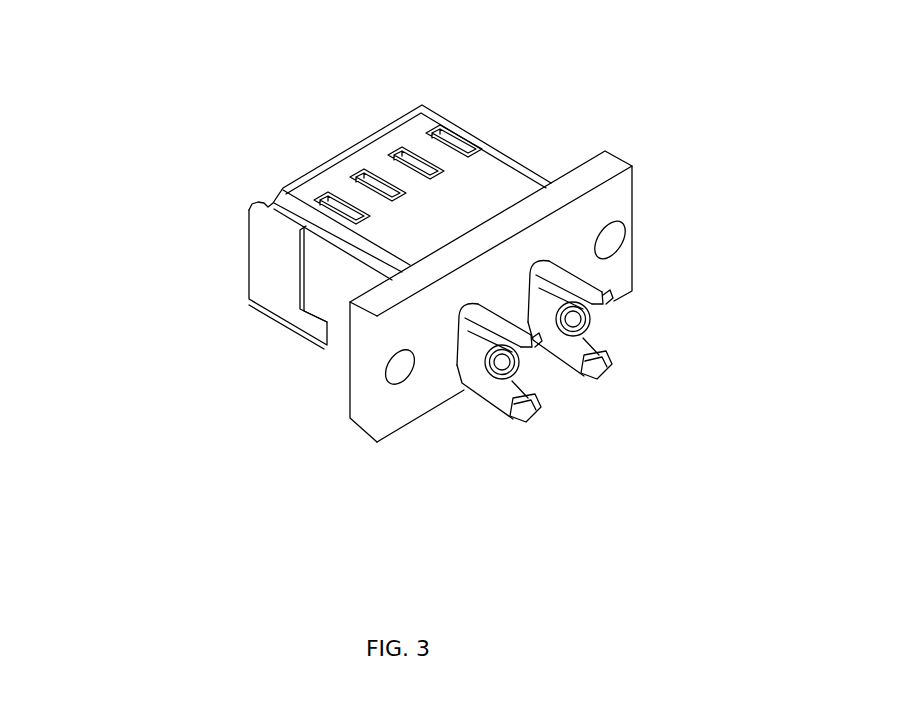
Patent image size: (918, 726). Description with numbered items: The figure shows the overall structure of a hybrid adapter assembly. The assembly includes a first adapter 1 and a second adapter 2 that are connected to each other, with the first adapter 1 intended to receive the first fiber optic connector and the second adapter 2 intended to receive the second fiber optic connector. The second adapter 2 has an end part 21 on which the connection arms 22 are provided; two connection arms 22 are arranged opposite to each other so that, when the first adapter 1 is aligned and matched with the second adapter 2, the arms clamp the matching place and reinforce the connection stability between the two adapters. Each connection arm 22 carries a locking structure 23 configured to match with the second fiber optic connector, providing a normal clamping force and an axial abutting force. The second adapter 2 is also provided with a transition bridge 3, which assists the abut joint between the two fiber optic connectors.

The first adapter 1 is at (485, 195).
The second adapter 2 is at (342, 417).
The end part 21 is at (430, 327).
The transition bridge 3 is at (473, 357).
The connection arm 22 is at (537, 350).
The locking structure 23 is at (547, 352).